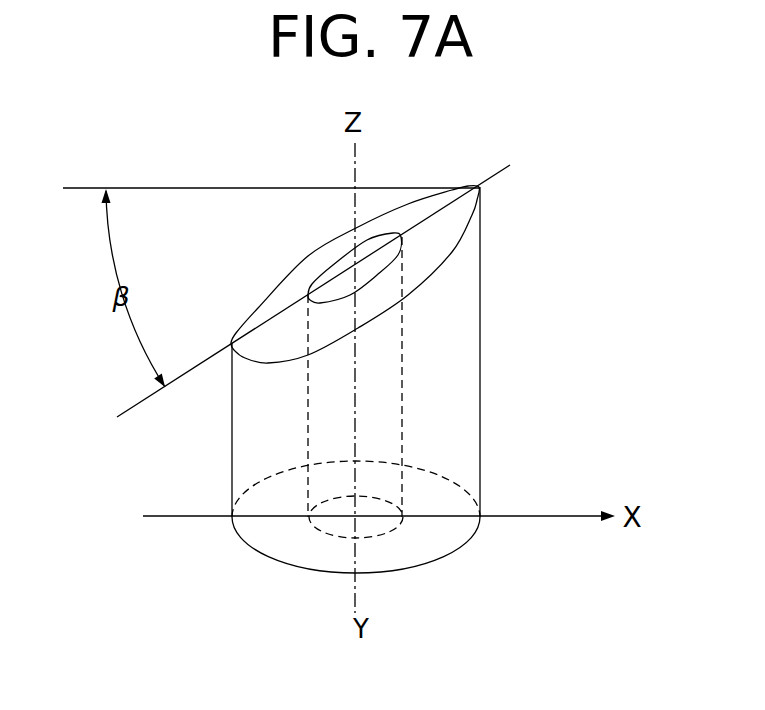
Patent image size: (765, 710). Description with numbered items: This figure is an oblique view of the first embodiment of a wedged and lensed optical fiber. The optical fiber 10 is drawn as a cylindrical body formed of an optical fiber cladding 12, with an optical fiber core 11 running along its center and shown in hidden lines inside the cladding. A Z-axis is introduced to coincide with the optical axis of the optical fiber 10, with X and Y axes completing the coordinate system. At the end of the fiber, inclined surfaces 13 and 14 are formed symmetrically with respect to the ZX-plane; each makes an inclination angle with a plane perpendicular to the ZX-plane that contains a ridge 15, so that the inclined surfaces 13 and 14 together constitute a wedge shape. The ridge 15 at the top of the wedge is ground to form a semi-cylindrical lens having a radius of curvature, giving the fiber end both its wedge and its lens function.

The optical fiber 10 is at (382, 360).
The optical fiber core 11 is at (368, 274).
The optical fiber cladding 12 is at (268, 505).
The inclined surface 13 is at (313, 267).
The inclined surface 14 is at (427, 264).
The ridge 15 is at (451, 199).